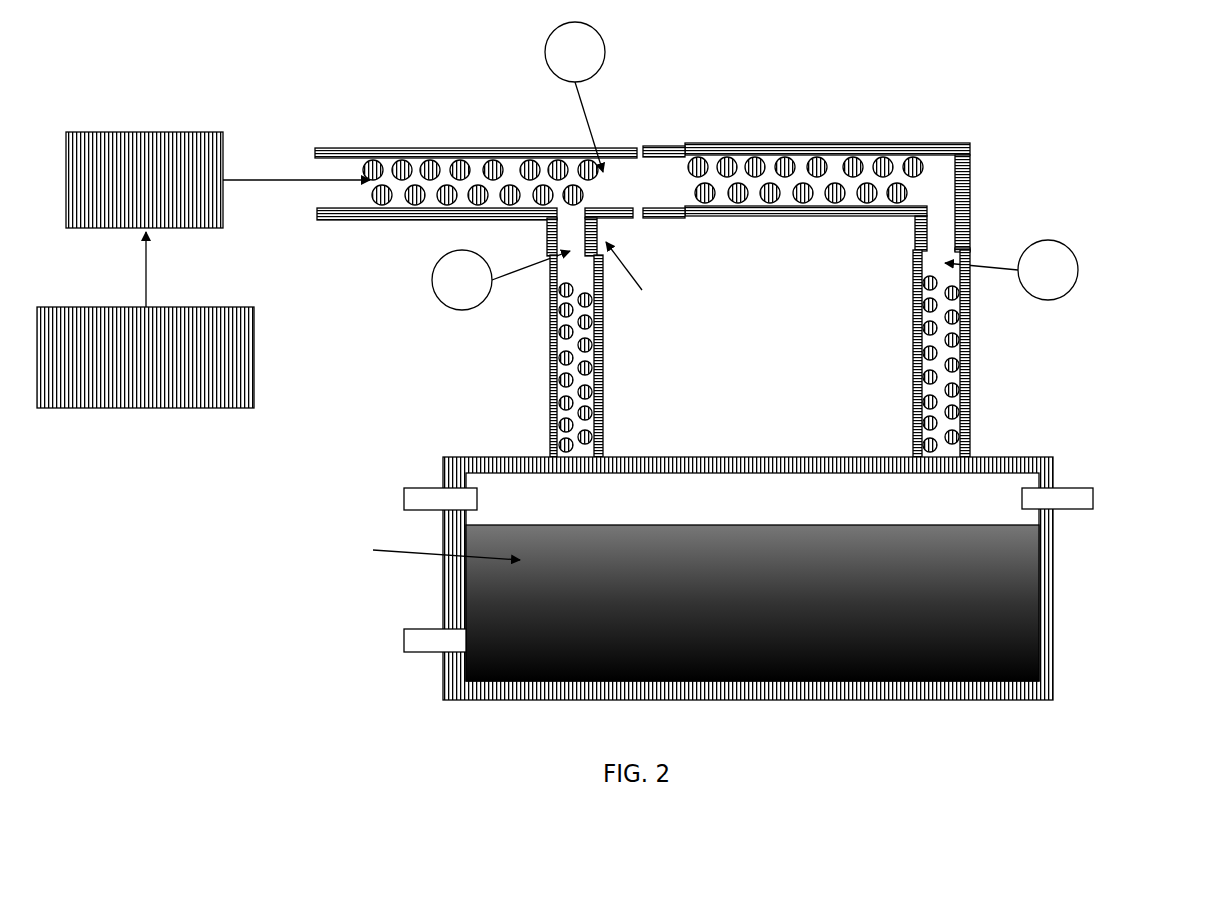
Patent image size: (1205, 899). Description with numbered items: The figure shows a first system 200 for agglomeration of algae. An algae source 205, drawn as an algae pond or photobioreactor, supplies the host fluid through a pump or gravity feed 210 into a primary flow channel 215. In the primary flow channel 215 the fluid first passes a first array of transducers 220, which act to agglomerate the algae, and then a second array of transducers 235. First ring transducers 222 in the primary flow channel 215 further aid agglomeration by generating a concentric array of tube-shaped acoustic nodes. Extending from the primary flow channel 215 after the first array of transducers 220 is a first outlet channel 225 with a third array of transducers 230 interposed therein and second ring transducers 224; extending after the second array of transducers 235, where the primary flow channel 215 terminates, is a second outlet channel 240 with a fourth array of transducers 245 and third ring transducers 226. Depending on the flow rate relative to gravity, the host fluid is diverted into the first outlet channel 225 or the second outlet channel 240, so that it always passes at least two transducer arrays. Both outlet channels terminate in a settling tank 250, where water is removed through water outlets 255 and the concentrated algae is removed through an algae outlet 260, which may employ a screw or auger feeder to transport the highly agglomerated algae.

The algae harvesting system 200 is at (348, 730).
The algae pond or photobioreactor 205 is at (145, 335).
The pump or gravity feed 210 is at (144, 164).
The primary flow channel 215 is at (296, 191).
The first array of transducers 220 is at (457, 168).
The first ring transducers 222 is at (630, 141).
The second ring transducers 224 is at (540, 272).
The first outlet channel 225 is at (540, 343).
The third ring transducers 226 is at (981, 249).
The third array of transducers 230 is at (582, 364).
The second array of transducers 235 is at (799, 187).
The second outlet channel 240 is at (986, 343).
The fourth array of transducers 245 is at (947, 388).
The settling tank with concentrated algae 250 is at (636, 578).
The water outlets 255 is at (718, 506).
The algae outlets 260 is at (357, 656).